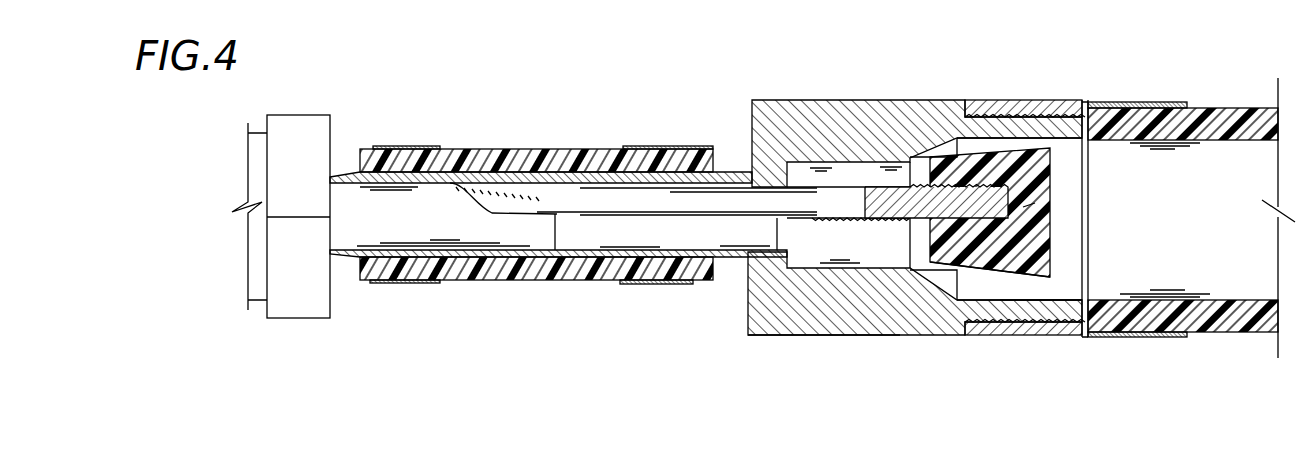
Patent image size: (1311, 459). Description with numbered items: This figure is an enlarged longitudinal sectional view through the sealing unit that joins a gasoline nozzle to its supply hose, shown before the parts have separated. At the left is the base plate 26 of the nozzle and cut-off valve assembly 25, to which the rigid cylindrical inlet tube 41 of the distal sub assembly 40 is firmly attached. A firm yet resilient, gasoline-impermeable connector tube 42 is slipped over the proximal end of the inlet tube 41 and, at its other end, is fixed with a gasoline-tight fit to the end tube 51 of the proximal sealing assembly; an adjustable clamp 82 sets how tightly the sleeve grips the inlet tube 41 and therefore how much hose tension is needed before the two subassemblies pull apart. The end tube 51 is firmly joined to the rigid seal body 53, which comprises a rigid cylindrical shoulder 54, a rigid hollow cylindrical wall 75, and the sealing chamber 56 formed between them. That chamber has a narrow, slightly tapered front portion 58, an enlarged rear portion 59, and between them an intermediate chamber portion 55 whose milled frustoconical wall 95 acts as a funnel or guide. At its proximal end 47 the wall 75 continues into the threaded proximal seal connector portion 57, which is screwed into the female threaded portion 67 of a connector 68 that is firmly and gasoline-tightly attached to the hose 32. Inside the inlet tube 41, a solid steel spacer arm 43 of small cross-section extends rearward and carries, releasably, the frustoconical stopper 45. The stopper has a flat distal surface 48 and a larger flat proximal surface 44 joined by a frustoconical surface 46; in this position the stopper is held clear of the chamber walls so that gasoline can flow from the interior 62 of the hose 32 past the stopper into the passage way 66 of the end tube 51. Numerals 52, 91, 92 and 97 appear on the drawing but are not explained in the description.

The nozzle and cut-off valve assembly 25 is at (252, 283).
The base plate 26 is at (333, 117).
The hose 32 is at (1183, 132).
The distal sub assembly 40 is at (538, 196).
The inlet tube 41 is at (392, 170).
The connector tube 42 is at (688, 163).
The spacer arm 43 is at (540, 200).
The proximal surface 44 is at (1050, 222).
The stopper 45 is at (1050, 203).
The frustoconical surface 46 is at (1045, 262).
The proximal end 47 is at (1047, 290).
The distal surface 48 is at (932, 243).
The end tube 51 is at (590, 277).
The lower sleeve end strip 52 is at (662, 282).
The seal body 53 is at (792, 100).
The shoulder 54 is at (767, 320).
The intermediate chamber portion 55 is at (947, 140).
The sealing chamber 56 is at (968, 73).
The threaded proximal seal connector portion 57 is at (955, 305).
The front chamber portion 58 is at (856, 166).
The rear chamber portion 59 is at (985, 148).
The interior of the hose 62 is at (1174, 231).
The passage way 66 is at (679, 241).
The female threaded portion 67 is at (1053, 338).
The connector 68 is at (1127, 102).
The wall 75 is at (787, 328).
The clamp 82 is at (422, 281).
The lower chamber 91 is at (789, 260).
The chamber floor 92 is at (906, 274).
The milled frustoconical wall 95 is at (926, 285).
The tapered inner member 97 is at (470, 190).